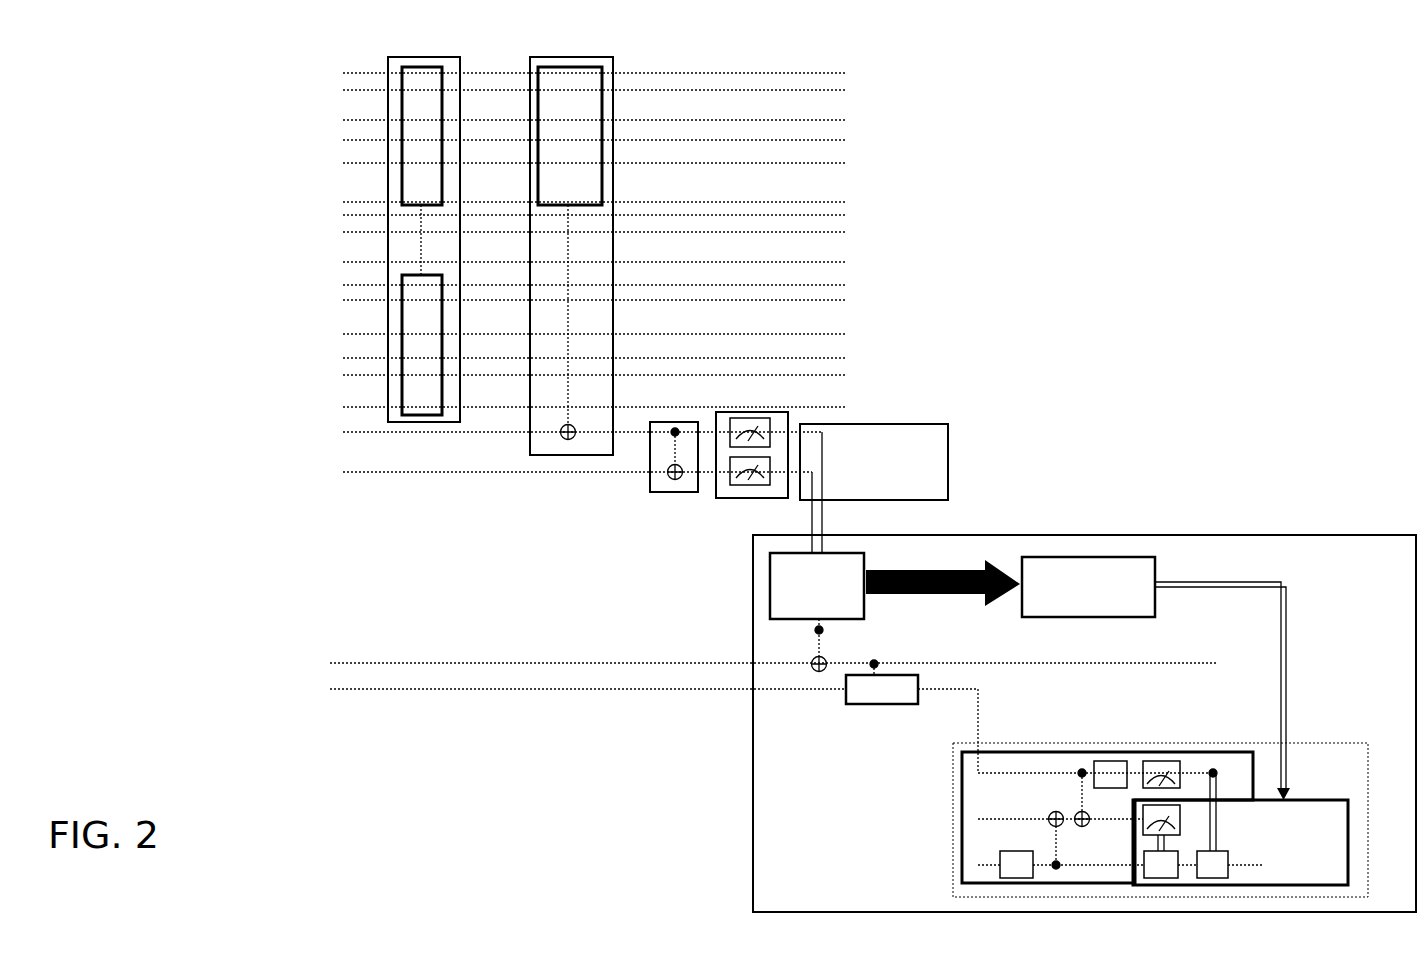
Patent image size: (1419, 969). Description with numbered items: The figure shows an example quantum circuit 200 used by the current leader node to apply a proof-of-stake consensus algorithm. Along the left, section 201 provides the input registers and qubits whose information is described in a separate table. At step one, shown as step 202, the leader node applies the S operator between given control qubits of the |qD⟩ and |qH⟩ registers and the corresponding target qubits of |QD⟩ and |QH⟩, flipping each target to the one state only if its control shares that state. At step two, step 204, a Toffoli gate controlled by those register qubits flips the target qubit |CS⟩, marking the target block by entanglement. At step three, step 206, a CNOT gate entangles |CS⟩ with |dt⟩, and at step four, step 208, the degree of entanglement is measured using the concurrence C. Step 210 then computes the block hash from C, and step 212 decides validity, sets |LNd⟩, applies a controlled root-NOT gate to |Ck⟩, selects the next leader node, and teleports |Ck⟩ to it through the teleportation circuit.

The quantum circuit 200 is at (237, 140).
The section 201 is at (307, 720).
The step one (S operator) 202 is at (421, 445).
The step two (Toffoli gate) 204 is at (553, 482).
The step three (CNOT gate) 206 is at (657, 518).
The step four (entanglement measurement) 208 is at (720, 523).
The step five (hash computation) 210 is at (878, 388).
The step six (validation and leader selection) 212 is at (1045, 483).